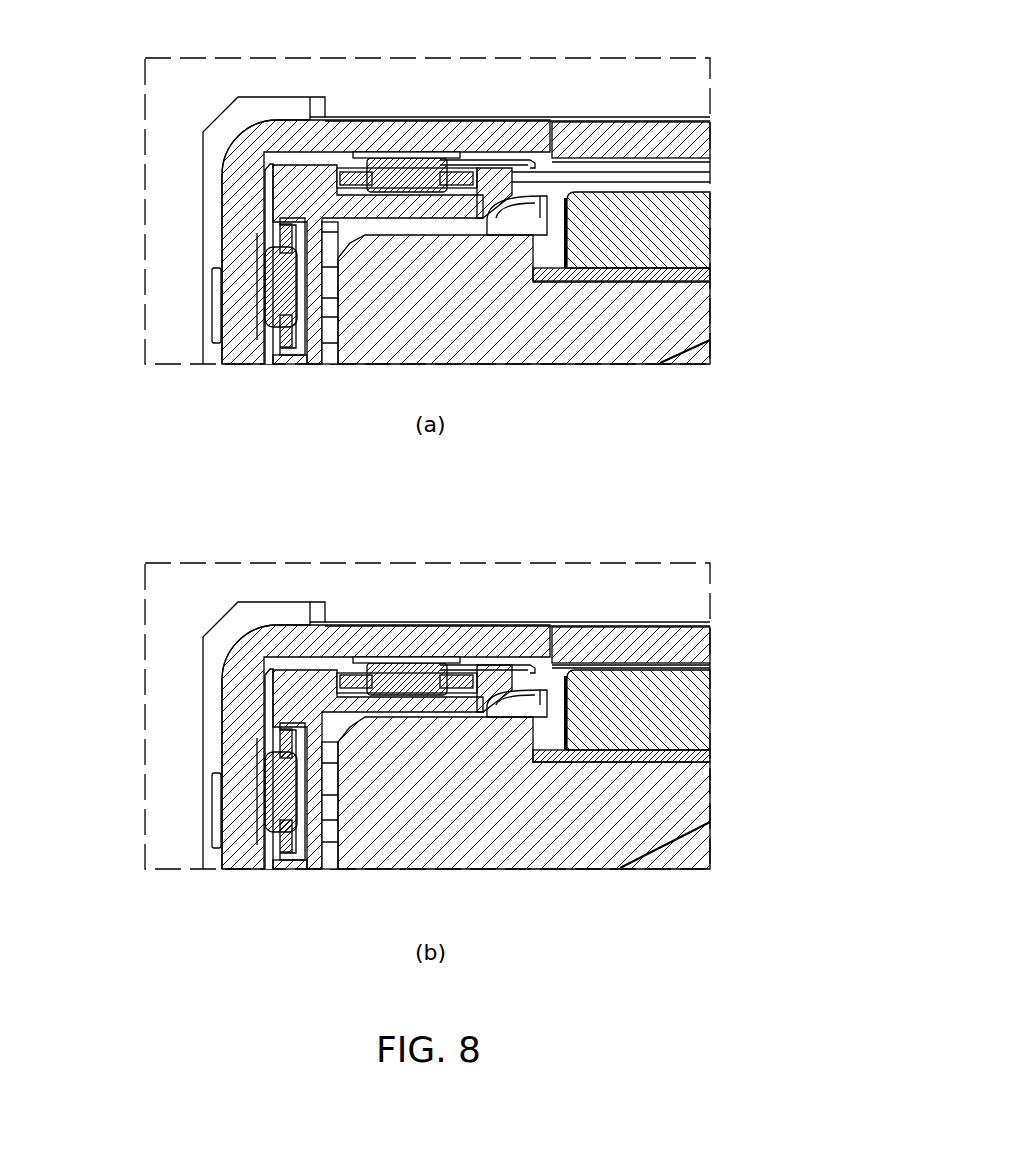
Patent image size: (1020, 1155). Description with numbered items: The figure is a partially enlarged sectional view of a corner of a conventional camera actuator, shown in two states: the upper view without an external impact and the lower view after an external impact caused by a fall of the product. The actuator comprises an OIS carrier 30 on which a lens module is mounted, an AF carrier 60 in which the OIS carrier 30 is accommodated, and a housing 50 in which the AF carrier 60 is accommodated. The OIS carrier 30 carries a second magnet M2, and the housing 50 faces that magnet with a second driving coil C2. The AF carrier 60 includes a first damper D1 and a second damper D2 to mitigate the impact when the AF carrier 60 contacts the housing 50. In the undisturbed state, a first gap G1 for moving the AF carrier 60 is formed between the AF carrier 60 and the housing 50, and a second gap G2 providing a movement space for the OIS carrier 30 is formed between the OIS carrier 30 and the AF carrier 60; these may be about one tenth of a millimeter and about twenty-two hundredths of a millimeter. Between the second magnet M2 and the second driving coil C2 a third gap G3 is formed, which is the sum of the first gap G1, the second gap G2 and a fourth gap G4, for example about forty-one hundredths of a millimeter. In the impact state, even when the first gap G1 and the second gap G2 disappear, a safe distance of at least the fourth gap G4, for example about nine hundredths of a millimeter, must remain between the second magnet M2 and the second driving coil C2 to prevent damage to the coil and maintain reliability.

The first damper D1 is at (371, 168).
The second damper D2 is at (273, 258).
The housing 50 is at (400, 172).
The AF carrier 60 is at (500, 180).
The second driving coil C2 is at (706, 142).
The second magnet M2 is at (702, 236).
The OIS carrier 30 is at (700, 322).
The first gap G1 is at (420, 178).
The second gap G2 is at (407, 190).
The third gap G3 is at (608, 222).
The fourth gap G4 is at (608, 715).